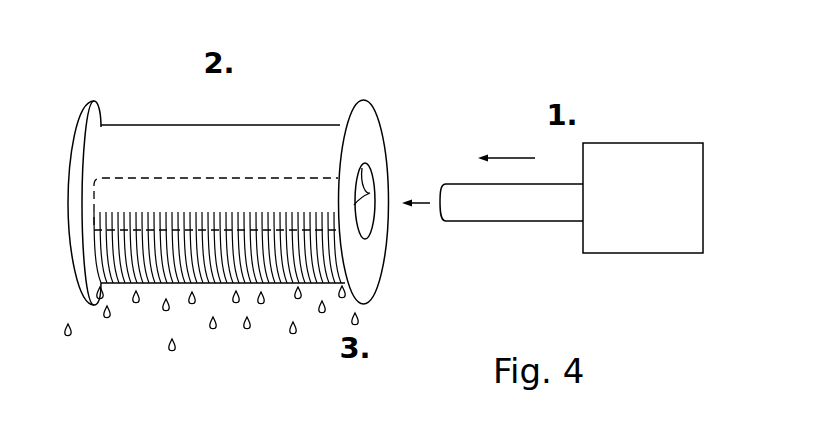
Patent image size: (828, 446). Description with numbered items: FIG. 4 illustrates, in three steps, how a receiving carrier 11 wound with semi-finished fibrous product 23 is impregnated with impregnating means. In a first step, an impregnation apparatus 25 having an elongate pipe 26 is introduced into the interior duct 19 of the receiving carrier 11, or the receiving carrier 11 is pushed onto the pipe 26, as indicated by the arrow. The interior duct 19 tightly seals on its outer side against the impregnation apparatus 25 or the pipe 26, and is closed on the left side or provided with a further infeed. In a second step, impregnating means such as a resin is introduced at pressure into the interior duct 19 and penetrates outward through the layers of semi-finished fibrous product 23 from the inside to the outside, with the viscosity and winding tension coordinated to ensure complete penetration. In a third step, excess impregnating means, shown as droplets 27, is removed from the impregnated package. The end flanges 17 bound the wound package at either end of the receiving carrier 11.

The receiving carrier 11 is at (388, 75).
The end flange 17 is at (95, 115).
The interior duct 19 is at (370, 224).
The semi-finished fibrous product 23 is at (311, 96).
The impregnation apparatus 25 is at (653, 230).
The elongate pipe 26 is at (498, 207).
The droplets 27 is at (230, 337).